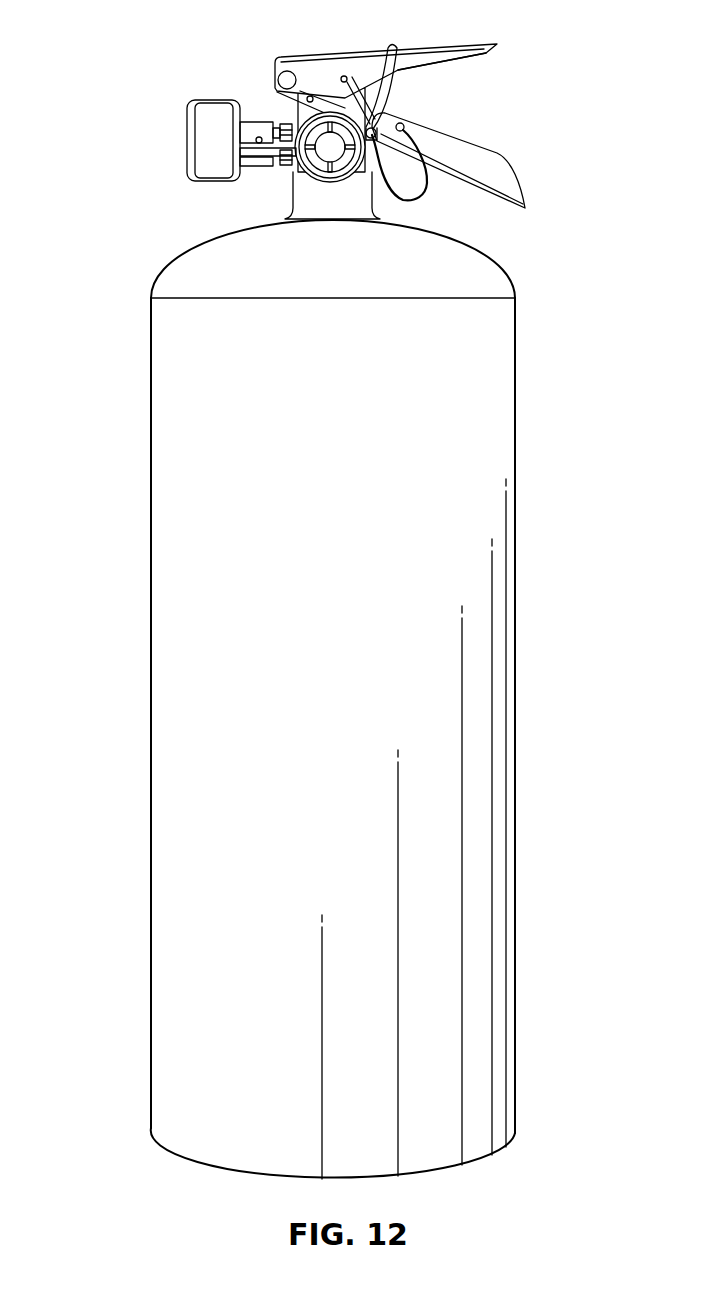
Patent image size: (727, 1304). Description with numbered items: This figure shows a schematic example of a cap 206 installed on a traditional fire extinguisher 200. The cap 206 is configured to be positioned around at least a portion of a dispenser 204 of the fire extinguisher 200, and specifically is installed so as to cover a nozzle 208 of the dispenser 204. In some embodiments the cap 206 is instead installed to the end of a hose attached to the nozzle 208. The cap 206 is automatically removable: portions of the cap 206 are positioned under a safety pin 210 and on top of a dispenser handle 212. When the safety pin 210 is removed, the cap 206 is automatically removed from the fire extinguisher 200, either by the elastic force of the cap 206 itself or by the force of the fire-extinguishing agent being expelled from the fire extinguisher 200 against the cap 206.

The fire extinguisher 200 is at (293, 595).
The dispenser 204 is at (485, 45).
The cap 206 is at (197, 152).
The nozzle 208 is at (257, 125).
The safety pin 210 is at (344, 77).
The dispenser handle 212 is at (472, 55).